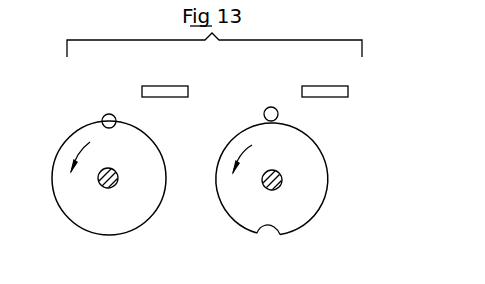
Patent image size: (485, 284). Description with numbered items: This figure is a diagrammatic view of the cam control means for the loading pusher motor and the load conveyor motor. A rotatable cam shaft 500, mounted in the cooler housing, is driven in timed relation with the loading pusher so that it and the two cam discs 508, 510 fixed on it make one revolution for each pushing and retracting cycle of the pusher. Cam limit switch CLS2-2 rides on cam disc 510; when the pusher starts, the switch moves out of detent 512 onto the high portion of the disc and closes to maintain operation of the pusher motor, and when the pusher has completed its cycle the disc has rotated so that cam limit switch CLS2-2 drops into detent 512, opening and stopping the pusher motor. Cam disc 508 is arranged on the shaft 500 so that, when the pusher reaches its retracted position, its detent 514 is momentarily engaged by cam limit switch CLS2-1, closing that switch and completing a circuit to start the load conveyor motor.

The cam shaft 500 is at (118, 172).
The cam disc 508 is at (110, 236).
The cam disc 510 is at (327, 192).
The detent 512 is at (274, 234).
The detent 514 is at (101, 121).
The cam limit switch CLS2-1 is at (114, 116).
The cam limit switch CLS2-2 is at (276, 110).